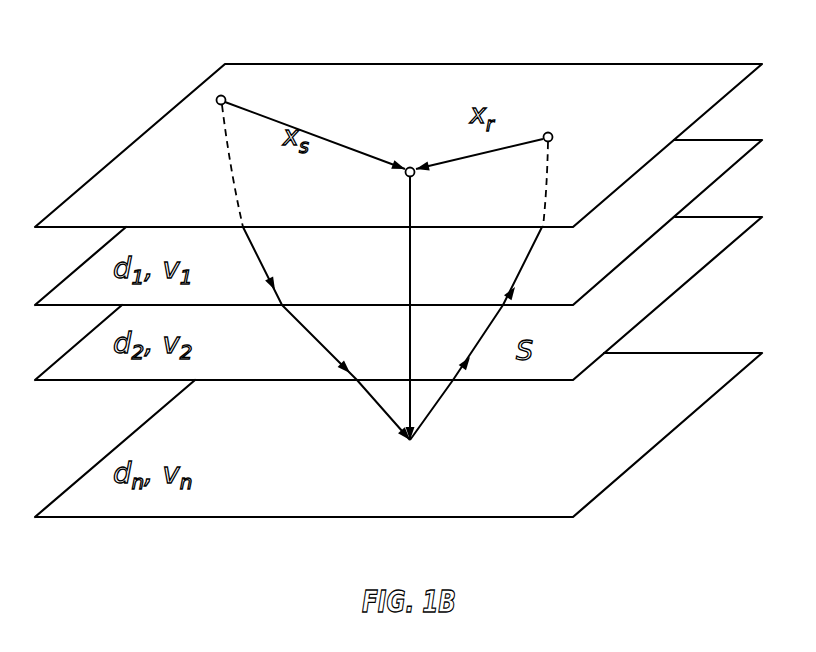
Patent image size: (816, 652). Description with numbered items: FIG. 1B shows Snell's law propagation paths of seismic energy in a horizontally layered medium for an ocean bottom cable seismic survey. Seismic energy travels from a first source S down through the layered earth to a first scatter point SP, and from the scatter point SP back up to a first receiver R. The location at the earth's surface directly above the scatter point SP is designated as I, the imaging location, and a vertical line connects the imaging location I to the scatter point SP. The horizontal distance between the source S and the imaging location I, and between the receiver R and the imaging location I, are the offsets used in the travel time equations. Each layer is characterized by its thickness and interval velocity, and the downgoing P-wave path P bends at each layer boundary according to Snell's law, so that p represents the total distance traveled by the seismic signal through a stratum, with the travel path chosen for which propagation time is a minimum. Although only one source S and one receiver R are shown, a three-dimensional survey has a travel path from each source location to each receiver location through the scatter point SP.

The source S is at (233, 86).
The imaging location I is at (411, 151).
The receiver R is at (559, 176).
The P-wave travel path P is at (326, 333).
The scatter point SP is at (413, 465).